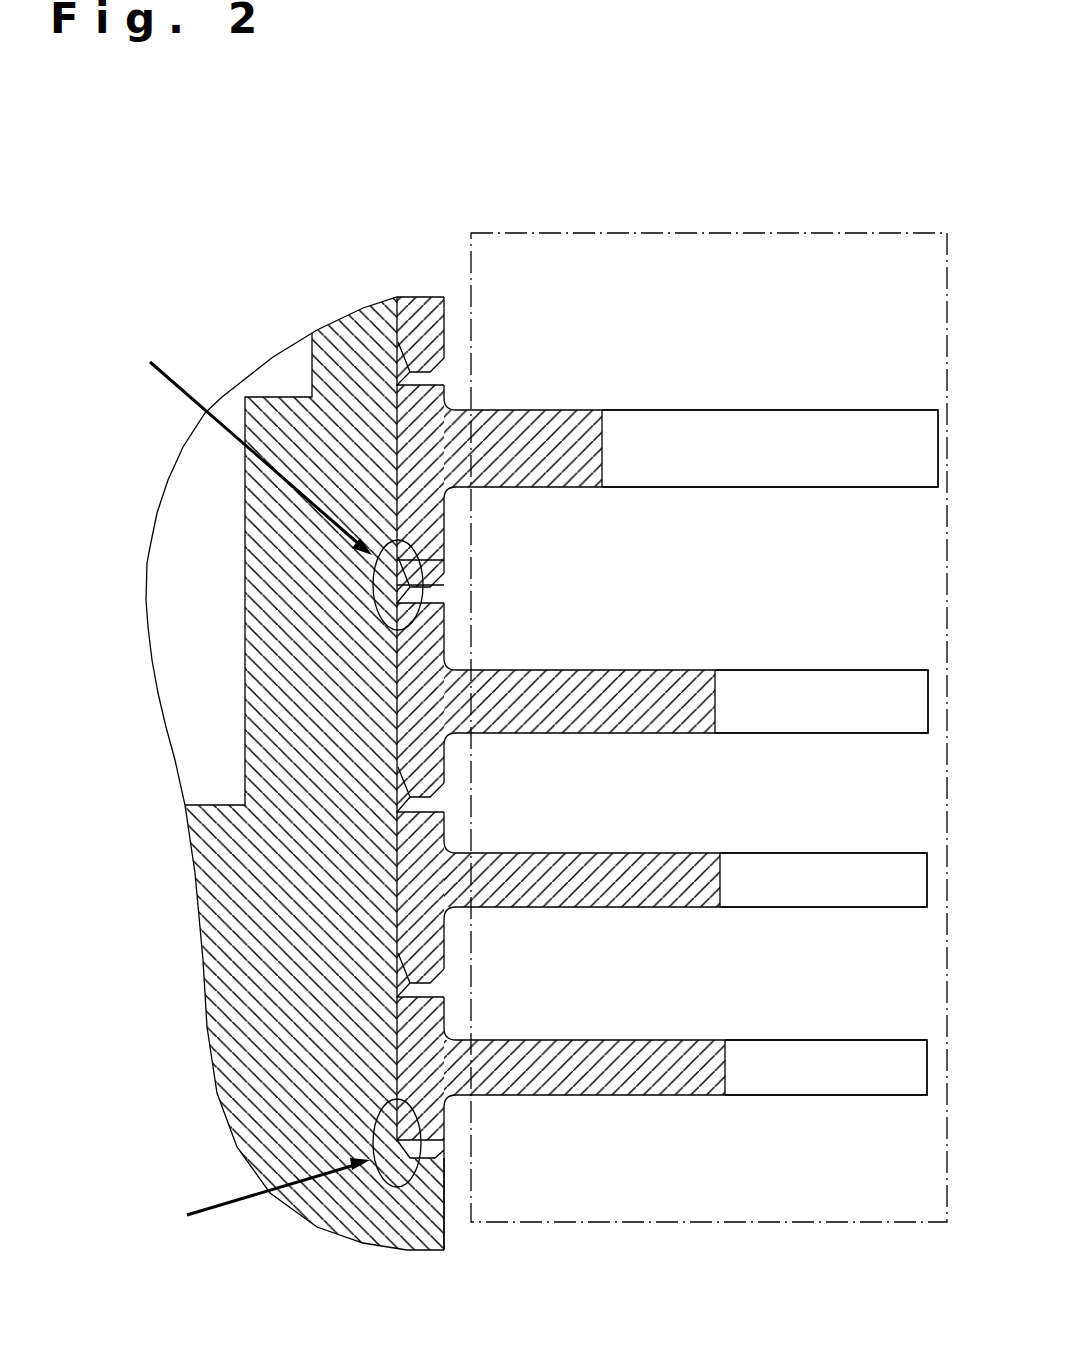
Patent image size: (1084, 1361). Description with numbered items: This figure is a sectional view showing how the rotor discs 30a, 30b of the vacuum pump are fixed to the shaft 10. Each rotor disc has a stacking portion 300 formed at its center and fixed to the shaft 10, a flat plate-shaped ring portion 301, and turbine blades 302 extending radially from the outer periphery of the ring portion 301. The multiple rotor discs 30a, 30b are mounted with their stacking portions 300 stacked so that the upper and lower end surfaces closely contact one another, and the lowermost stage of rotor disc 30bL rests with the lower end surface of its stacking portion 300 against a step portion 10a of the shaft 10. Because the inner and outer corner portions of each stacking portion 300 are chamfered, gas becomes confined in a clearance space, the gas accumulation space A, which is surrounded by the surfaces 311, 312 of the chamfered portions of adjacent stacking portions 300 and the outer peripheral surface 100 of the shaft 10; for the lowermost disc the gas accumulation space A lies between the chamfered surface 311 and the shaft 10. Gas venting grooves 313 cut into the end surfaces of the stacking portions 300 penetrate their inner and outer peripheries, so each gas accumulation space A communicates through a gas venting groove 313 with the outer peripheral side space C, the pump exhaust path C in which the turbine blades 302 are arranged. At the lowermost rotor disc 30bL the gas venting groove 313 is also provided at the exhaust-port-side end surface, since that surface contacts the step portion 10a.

The shaft 10 is at (248, 1090).
The step portion 10a is at (457, 1184).
The outer peripheral surface 100 is at (407, 557).
The stacking portion 300 is at (447, 393).
The ring portion 301 is at (580, 430).
The turbine blades 302 is at (797, 450).
The rotor disc 30a is at (868, 395).
The rotor disc 30b is at (860, 655).
The lowermost stage of rotor disc 30bL is at (865, 1027).
The surface of the chamfered portion 311 is at (390, 578).
The surface of the chamfered portion 312 is at (398, 592).
The gas venting groove 313 is at (420, 586).
The gas accumulation space A is at (246, 782).
The pump exhaust path C is at (767, 230).